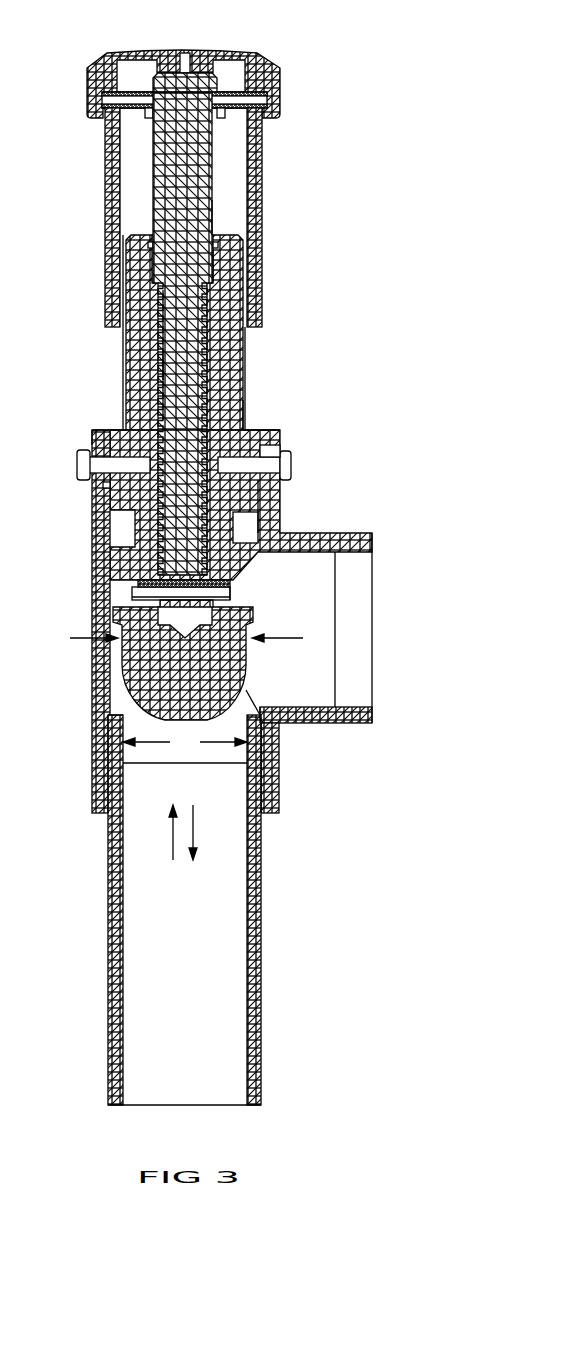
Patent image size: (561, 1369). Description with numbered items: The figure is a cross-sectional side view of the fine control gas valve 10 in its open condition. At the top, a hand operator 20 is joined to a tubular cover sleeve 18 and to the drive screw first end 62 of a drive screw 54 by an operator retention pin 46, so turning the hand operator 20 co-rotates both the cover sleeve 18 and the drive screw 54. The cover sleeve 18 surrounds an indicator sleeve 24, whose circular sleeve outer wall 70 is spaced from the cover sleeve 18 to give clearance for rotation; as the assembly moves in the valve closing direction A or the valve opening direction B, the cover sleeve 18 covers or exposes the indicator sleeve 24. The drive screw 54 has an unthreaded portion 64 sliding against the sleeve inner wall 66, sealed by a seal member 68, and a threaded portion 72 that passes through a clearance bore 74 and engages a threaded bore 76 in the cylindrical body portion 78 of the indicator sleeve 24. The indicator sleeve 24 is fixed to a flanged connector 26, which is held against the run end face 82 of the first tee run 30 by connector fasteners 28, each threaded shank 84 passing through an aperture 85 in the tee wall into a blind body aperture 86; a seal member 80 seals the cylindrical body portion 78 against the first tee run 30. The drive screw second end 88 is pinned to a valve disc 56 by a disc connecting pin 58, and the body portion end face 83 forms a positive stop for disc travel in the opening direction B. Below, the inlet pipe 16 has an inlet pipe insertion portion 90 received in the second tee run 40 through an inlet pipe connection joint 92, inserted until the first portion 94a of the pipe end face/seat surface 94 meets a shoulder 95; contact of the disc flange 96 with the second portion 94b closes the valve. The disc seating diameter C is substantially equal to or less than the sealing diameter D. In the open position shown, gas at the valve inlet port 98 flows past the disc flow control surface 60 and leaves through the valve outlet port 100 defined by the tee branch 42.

The fine control gas valve 10 is at (76, 176).
The inlet pipe 16 is at (120, 983).
The cover sleeve 18 is at (110, 200).
The hand operator 20 is at (275, 103).
The indicator sleeve 24 is at (235, 357).
The flanged connector 26 is at (114, 428).
The connector fasteners 28 is at (282, 452).
The first tee run 30 is at (278, 488).
The second tee run 40 is at (273, 787).
The tee branch 42 is at (364, 718).
The operator retention pin 46 is at (125, 106).
The drive screw 54 is at (193, 177).
The valve disc 56 is at (232, 588).
The disc connecting pin 58 is at (133, 592).
The disc flow control surface 60 is at (143, 682).
The drive screw first end 62 is at (200, 82).
The drive screw unthreaded portion 64 is at (224, 218).
The sleeve inner wall 66 is at (224, 265).
The seal member 68 is at (219, 245).
The sleeve outer wall 70 is at (108, 283).
The threaded portion 72 is at (147, 367).
The clearance bore 74 is at (210, 387).
The threaded bore 76 is at (212, 542).
The cylindrical body portion 78 is at (252, 508).
The seal member 80 is at (105, 488).
The run end face 82 is at (92, 430).
The body portion end face 83 is at (132, 565).
The threaded shank 84 is at (225, 462).
The aperture 85 is at (88, 478).
The blind body apertures 86 is at (243, 432).
The drive screw second end 88 is at (232, 600).
The inlet pipe insertion portion 90 is at (115, 747).
The inlet pipe connection joint 92 is at (94, 793).
The pipe end face/seat surface 94 is at (270, 700).
The first portion 94a is at (258, 718).
The second portion 94b is at (263, 700).
The shoulder 95 is at (97, 710).
The disc flange 96 is at (113, 614).
The valve inlet port 98 is at (192, 1080).
The valve outlet port 100 is at (360, 633).
The valve closing direction A is at (200, 832).
The valve opening direction B is at (164, 832).
The disc seating diameter C is at (176, 638).
The sealing diameter D is at (185, 742).